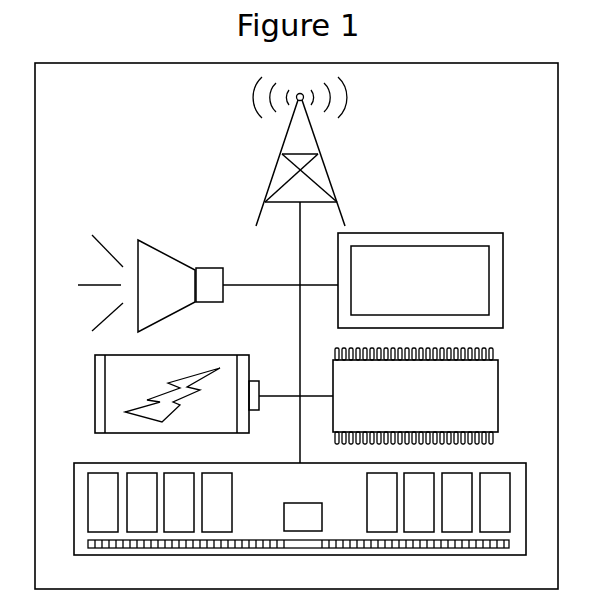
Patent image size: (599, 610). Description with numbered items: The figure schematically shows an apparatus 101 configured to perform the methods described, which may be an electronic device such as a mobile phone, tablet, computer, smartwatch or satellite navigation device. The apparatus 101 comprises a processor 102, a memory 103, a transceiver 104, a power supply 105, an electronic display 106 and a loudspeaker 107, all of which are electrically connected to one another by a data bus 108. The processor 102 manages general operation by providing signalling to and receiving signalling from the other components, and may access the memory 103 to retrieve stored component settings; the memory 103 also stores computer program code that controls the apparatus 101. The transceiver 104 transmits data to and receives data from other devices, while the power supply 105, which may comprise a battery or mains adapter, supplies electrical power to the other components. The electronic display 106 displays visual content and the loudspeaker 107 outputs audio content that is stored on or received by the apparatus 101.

The apparatus 101 is at (296, 326).
The processor 102 is at (415, 396).
The memory 103 is at (300, 509).
The transceiver 104 is at (276, 166).
The power supply 105 is at (177, 394).
The electronic display 106 is at (420, 280).
The loudspeaker 107 is at (150, 283).
The data bus 108 is at (298, 239).